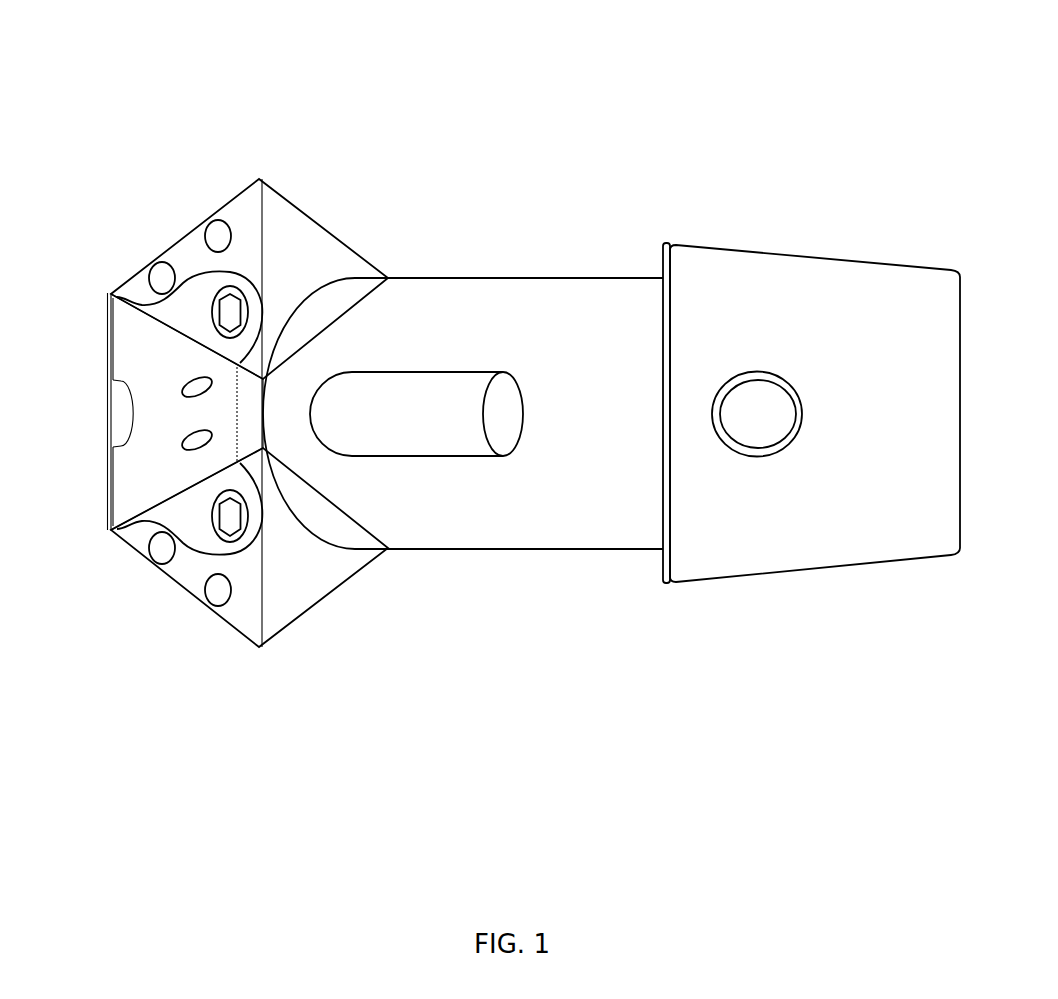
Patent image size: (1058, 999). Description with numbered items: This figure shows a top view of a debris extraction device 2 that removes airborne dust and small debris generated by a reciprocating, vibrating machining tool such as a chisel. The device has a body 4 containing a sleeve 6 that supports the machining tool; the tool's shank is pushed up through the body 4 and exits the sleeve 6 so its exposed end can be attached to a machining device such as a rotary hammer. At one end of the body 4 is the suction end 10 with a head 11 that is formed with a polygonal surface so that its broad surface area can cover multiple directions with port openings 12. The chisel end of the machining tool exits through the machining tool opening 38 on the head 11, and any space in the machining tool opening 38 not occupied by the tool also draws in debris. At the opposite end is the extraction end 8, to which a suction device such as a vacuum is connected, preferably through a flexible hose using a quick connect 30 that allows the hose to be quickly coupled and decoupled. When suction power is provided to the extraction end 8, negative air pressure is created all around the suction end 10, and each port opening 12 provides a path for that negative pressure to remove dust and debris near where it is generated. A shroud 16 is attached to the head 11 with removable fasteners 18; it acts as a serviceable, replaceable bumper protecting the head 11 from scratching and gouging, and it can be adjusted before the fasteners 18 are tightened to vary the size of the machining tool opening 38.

The debris extraction device 2 is at (389, 108).
The body 4 is at (591, 292).
The sleeve 6 is at (458, 403).
The extraction end 8 is at (812, 255).
The suction end 10 is at (229, 144).
The head 11 is at (312, 663).
The port openings 12 is at (157, 288).
The shroud 16 is at (133, 347).
The fasteners 18 is at (228, 315).
The quick connect 30 is at (790, 398).
The machining tool opening 38 is at (117, 412).